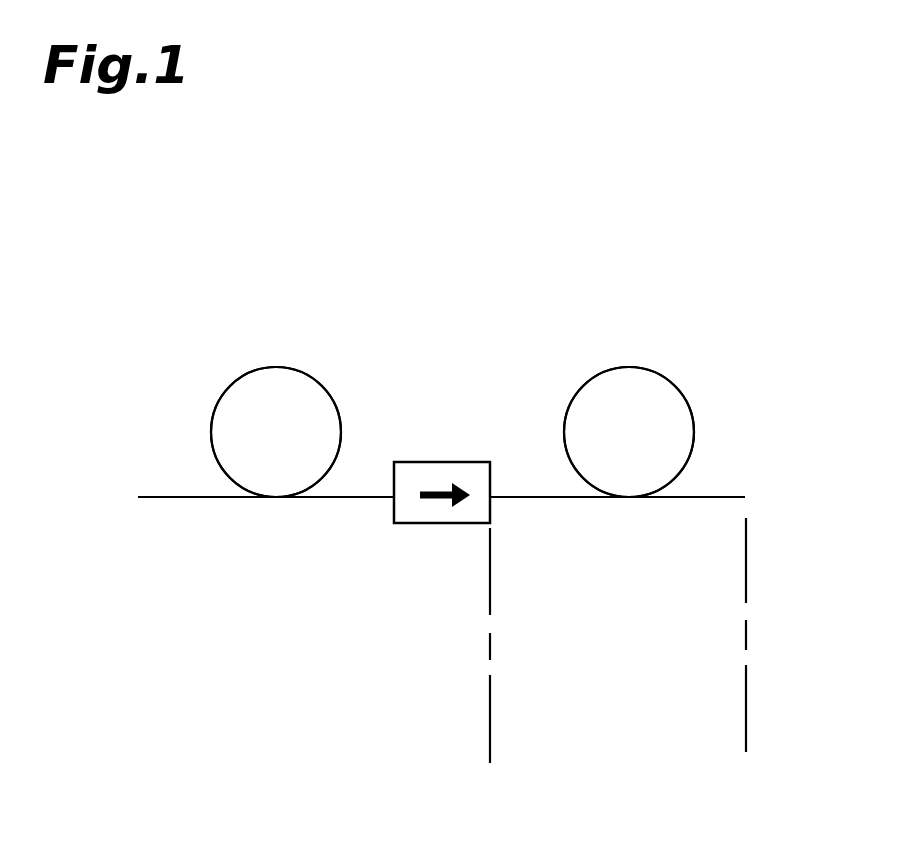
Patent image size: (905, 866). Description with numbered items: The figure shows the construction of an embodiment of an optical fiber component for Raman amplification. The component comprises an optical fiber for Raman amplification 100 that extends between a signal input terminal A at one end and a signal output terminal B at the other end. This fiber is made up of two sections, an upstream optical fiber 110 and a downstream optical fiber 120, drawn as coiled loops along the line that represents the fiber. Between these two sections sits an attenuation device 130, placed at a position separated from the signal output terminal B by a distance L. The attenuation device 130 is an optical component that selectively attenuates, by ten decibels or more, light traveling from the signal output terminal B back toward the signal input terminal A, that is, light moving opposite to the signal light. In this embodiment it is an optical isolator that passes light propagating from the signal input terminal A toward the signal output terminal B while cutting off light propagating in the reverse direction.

The optical fiber for Raman amplification 100 is at (620, 263).
The upstream optical fiber 110 is at (287, 364).
The downstream optical fiber 120 is at (643, 364).
The attenuation device 130 is at (394, 523).
The signal input terminal A is at (138, 497).
The signal output terminal B is at (745, 497).
The distance L is at (497, 710).